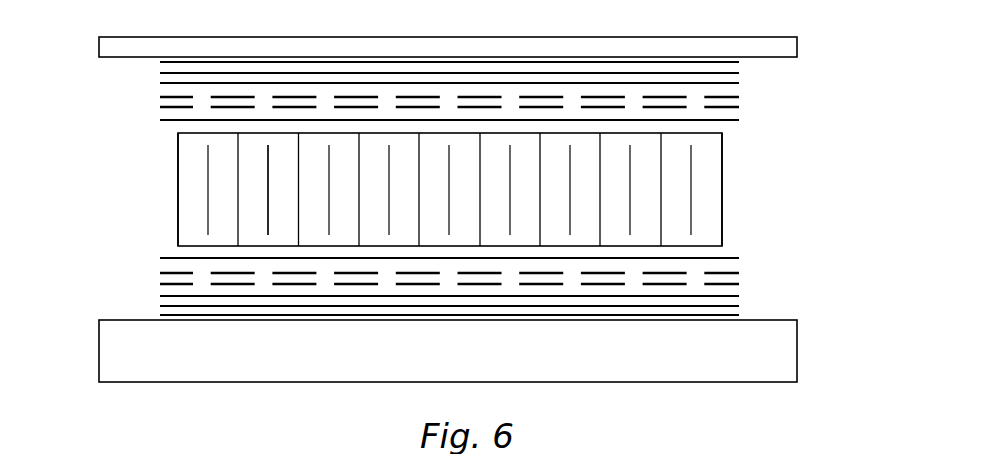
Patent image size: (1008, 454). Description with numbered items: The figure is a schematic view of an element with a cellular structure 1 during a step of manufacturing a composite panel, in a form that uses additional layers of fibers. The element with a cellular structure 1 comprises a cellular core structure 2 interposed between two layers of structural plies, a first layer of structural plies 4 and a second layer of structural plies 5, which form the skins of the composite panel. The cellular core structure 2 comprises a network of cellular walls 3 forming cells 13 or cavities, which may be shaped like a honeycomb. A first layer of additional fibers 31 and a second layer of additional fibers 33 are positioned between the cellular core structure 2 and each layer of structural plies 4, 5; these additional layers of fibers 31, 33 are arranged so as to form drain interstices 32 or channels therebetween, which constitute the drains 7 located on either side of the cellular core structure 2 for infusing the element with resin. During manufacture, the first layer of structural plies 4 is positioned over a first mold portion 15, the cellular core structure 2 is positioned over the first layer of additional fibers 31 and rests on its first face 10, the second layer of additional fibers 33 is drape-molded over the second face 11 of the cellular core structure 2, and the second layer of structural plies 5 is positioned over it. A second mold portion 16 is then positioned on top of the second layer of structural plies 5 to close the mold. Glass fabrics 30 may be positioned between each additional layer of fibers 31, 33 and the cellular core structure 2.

The element with a cellular structure 1 is at (90, 155).
The cellular core structure 2 is at (737, 188).
The cellular walls 3 is at (178, 190).
The first layer of structural plies 4 is at (764, 303).
The second layer of structural plies 5 is at (764, 76).
The drains 7 is at (637, 115).
The first face 10 is at (383, 274).
The second face 11 is at (263, 104).
The cells 13 is at (402, 128).
The first mold portion 15 is at (812, 352).
The second mold portion 16 is at (812, 45).
The glass fabrics 30 is at (163, 133).
The first layer of additional fibers 31 is at (764, 277).
The drain interstices 32 is at (260, 264).
The second layer of additional fibers 33 is at (764, 102).